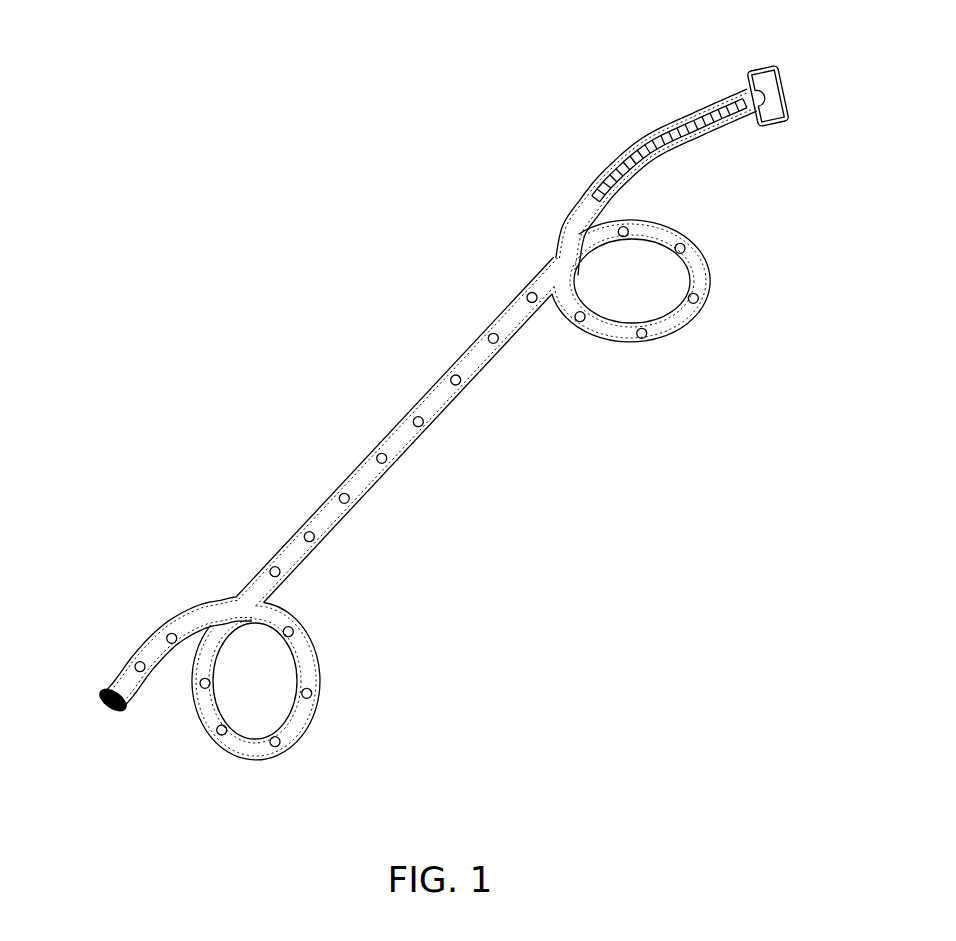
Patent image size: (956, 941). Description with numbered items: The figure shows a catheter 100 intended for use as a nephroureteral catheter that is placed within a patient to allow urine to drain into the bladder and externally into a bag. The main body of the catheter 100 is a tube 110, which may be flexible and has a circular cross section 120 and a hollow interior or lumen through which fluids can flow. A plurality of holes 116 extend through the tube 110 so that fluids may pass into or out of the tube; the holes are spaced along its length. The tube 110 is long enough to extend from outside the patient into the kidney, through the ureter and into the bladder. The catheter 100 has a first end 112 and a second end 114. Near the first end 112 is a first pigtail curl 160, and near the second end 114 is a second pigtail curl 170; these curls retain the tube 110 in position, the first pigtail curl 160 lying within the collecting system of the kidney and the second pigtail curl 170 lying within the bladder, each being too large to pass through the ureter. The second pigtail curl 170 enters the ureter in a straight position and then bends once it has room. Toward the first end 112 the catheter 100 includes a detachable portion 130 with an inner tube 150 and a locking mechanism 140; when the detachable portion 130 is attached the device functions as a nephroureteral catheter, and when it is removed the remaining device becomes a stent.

The catheter 100 is at (538, 465).
The tube 110 is at (294, 532).
The first end 112 is at (772, 126).
The second end 114 is at (109, 689).
The plurality of holes 116 is at (529, 291).
The circular cross section 120 is at (116, 712).
The detachable portion 130 is at (657, 133).
The locking mechanism 140 is at (762, 72).
The inner tube 150 is at (610, 183).
The first pigtail curl 160 is at (631, 343).
The second pigtail curl 170 is at (256, 758).